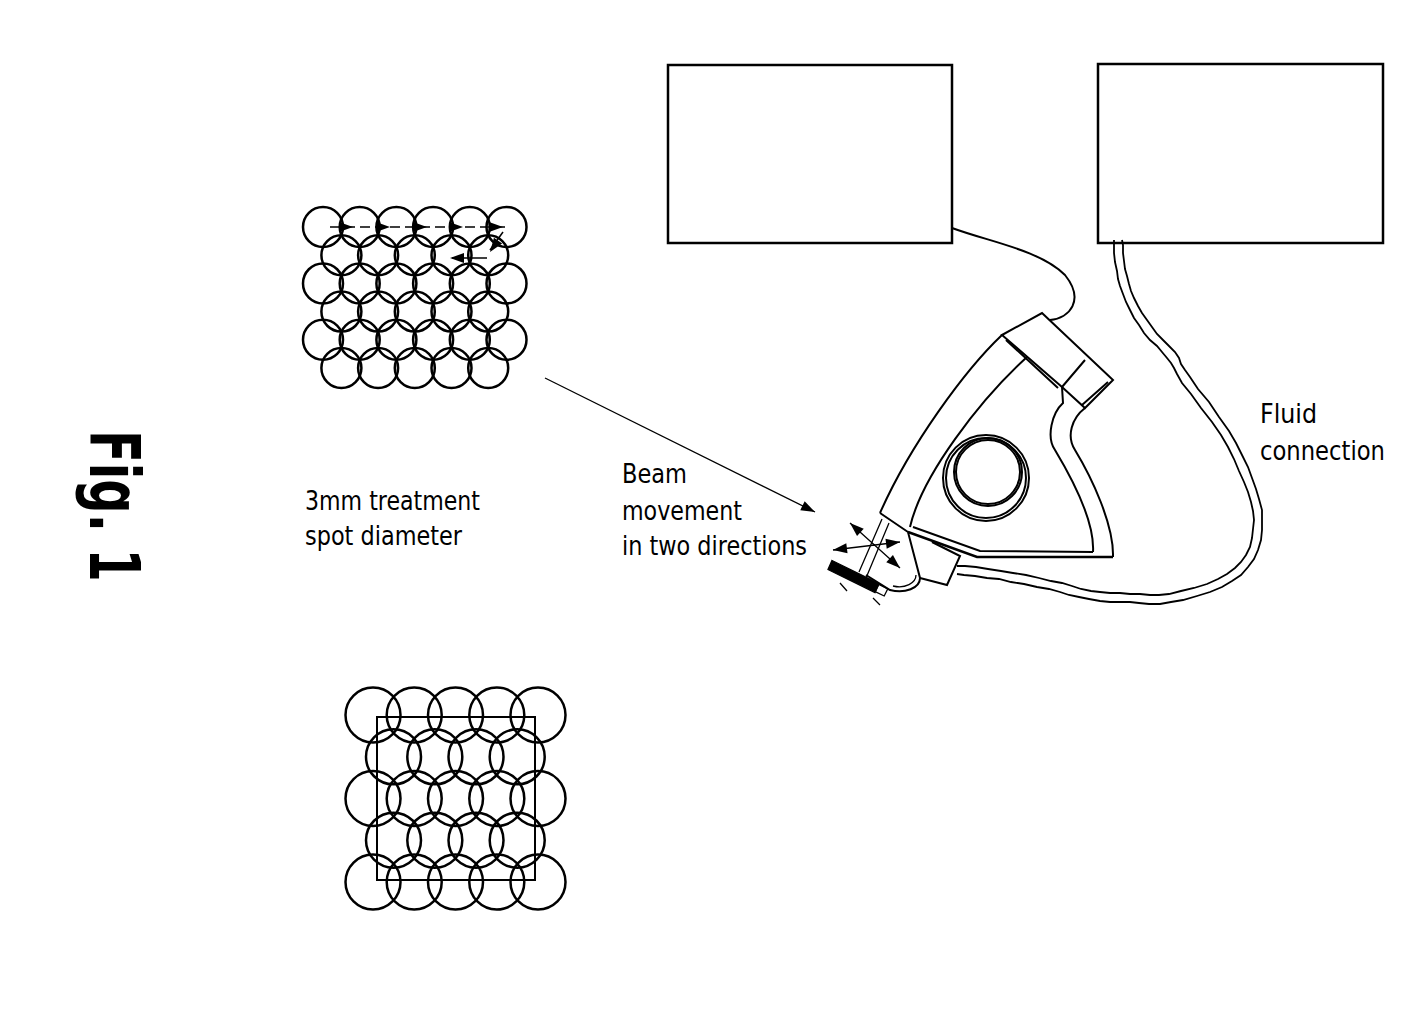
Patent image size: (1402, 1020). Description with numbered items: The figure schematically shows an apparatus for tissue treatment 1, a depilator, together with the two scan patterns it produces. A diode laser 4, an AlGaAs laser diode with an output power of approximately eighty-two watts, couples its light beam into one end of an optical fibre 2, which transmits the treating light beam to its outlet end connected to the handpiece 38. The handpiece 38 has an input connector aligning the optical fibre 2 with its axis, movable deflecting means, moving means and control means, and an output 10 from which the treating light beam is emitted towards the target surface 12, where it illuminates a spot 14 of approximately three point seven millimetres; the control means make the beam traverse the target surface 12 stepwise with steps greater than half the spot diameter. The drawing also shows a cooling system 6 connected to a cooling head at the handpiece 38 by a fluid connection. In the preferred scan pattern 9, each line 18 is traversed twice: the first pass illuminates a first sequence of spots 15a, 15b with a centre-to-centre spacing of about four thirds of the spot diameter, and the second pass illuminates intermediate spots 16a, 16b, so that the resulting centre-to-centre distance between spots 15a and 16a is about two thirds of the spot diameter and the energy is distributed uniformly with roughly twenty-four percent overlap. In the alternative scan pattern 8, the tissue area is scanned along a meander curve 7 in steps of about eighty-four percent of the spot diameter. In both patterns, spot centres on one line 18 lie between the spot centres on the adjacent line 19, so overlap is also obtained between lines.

The apparatus for tissue treatment 1 is at (993, 497).
The optical fibre 2 is at (983, 247).
The diode laser 4 is at (763, 243).
The cooling system 6 is at (1290, 243).
The meander curve 7 is at (357, 213).
The scan pattern 8 is at (441, 494).
The scan pattern 9 is at (451, 751).
The output 10 is at (877, 522).
The target surface 12 is at (857, 592).
The spot 14 is at (507, 215).
The first illuminated spot in the first sequence 15a is at (362, 693).
The spot of the first sequence 15b is at (458, 687).
The first illuminated spot in the second sequence 16a is at (402, 688).
The spot of the second sequence 16b is at (497, 690).
The line 18 is at (317, 230).
The adjacent line 19 is at (330, 258).
The handpiece 38 is at (1103, 492).